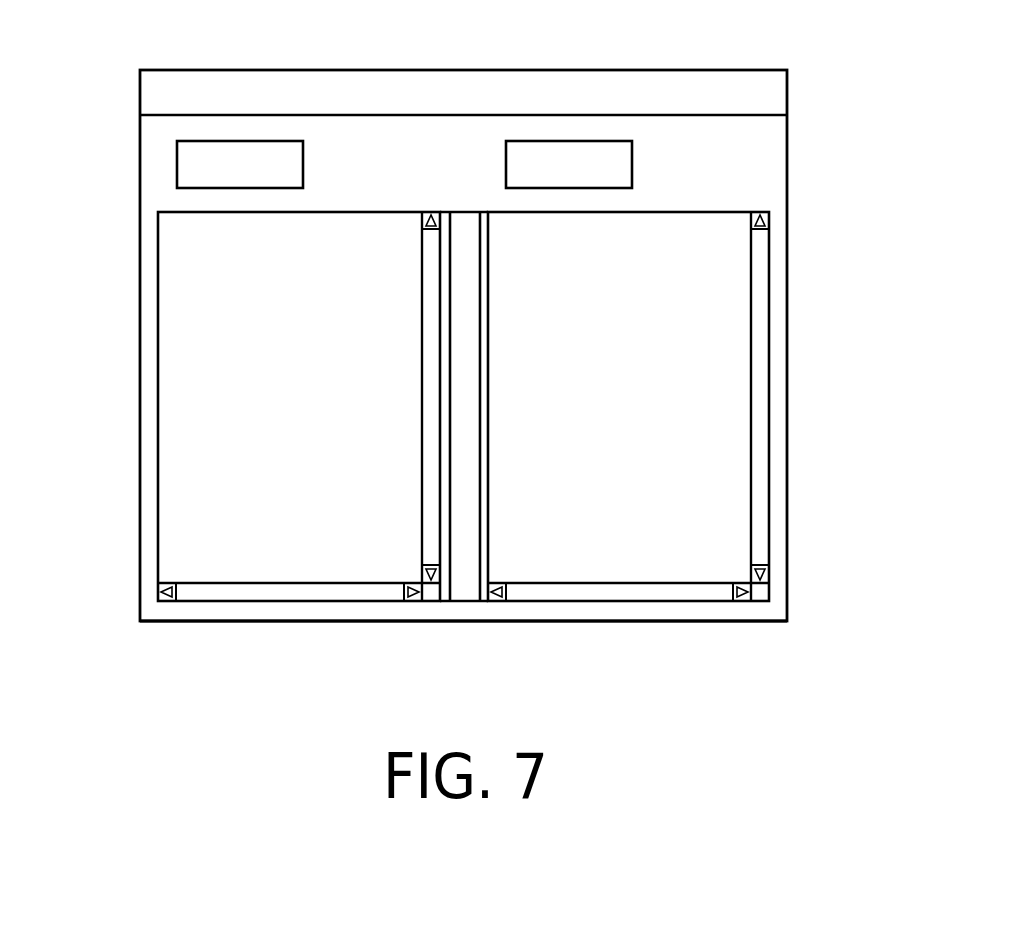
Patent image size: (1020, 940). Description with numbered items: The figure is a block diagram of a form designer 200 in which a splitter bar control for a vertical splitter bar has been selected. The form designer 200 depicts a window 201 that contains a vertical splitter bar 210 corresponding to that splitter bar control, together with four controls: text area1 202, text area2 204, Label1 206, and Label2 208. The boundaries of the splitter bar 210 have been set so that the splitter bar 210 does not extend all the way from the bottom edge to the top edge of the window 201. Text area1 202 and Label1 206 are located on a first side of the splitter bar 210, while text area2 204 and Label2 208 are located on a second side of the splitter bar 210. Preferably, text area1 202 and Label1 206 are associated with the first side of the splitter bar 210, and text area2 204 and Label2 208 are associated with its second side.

The form designer 200 is at (433, 36).
The window 201 is at (283, 622).
The text area1 202 is at (158, 380).
The text area2 204 is at (770, 263).
The Label1 206 is at (177, 161).
The Label2 208 is at (568, 141).
The vertical splitter bar 210 is at (462, 601).